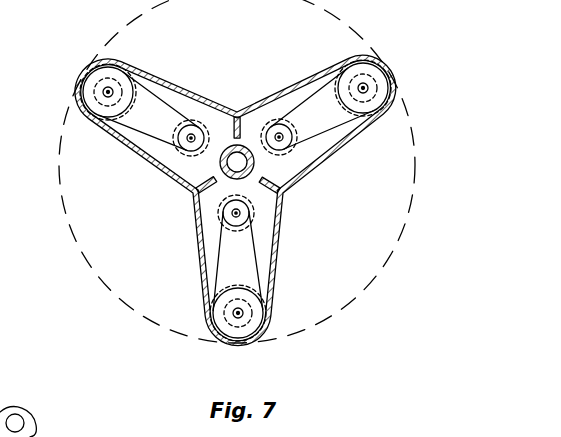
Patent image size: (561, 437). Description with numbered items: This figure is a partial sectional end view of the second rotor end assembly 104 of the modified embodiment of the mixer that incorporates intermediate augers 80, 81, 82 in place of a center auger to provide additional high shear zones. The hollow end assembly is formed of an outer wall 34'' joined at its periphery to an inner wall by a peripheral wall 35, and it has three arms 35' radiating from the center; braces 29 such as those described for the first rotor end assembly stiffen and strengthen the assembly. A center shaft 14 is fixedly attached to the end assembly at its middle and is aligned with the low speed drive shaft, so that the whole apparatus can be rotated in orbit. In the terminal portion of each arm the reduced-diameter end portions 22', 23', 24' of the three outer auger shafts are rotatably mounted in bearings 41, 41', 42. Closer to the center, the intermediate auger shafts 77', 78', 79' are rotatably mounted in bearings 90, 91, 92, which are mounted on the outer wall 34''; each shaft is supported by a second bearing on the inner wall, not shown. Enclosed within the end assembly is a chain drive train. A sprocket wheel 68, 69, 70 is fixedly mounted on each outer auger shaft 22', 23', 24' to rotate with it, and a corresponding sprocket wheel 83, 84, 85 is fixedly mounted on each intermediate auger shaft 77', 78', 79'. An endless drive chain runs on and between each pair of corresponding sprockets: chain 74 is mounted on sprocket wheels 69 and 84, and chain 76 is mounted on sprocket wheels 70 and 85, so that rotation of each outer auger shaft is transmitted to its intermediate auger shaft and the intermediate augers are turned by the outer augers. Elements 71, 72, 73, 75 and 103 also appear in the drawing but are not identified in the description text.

The center shaft 14 is at (193, 192).
The reduced portion of outer auger shaft 22' is at (391, 88).
The reduced portion of outer auger shaft 23' is at (76, 92).
The reduced portion of outer auger shaft 24' is at (267, 313).
The braces 29 is at (208, 110).
The outer wall 34'' is at (305, 246).
The peripheral wall 35 is at (305, 269).
The arms 35' is at (289, 57).
The bearing 41 is at (125, 90).
The bearing 41' is at (322, 87).
The bearing 42 is at (252, 330).
The sprocket wheel 68 is at (373, 72).
The sprocket wheel 69 is at (92, 105).
The sprocket wheel 70 is at (217, 316).
The bracket 71 is at (322, 80).
The bracket 72 is at (118, 118).
The bracket 73 is at (249, 280).
The chain 74 is at (352, 123).
The belt run 75 is at (145, 143).
The chain 76 is at (207, 275).
The intermediate auger shaft 77' is at (347, 158).
The intermediate auger shaft 78' is at (118, 170).
The intermediate auger shaft 79' is at (183, 261).
The intermediate auger 80 is at (239, 114).
The intermediate auger 81 is at (189, 125).
The intermediate auger 82 is at (222, 222).
The sprocket wheel 83 is at (245, 111).
The sprocket wheel 84 is at (180, 123).
The sprocket wheel 85 is at (250, 211).
The bearing 90 is at (292, 122).
The bearing 91 is at (173, 148).
The bearing 92 is at (240, 220).
The roller 103 is at (36, 420).
The second rotor end assembly 104 is at (338, 168).